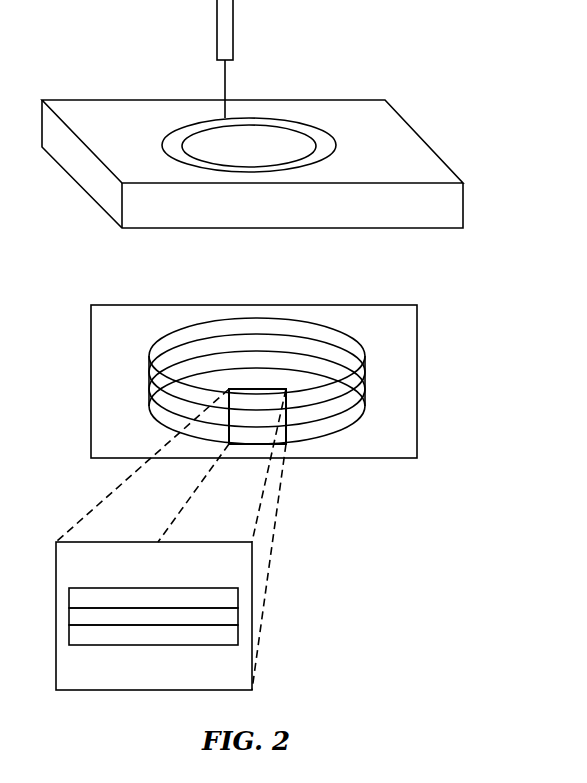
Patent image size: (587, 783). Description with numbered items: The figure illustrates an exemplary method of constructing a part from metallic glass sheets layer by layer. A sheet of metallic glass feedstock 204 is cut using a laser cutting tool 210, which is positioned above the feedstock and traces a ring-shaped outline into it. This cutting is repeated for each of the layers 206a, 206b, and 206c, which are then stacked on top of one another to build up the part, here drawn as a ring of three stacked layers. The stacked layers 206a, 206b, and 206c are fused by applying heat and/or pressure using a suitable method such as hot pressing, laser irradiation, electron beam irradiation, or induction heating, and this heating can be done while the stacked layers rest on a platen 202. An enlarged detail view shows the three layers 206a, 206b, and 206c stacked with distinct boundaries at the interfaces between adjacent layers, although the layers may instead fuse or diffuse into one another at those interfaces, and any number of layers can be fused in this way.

The platen 202 is at (267, 497).
The metallic glass feedstock 204 is at (357, 117).
The layer 206a is at (149, 411).
The layer 206b is at (149, 384).
The layer 206c is at (149, 362).
The laser cutting tool 210 is at (236, 0).